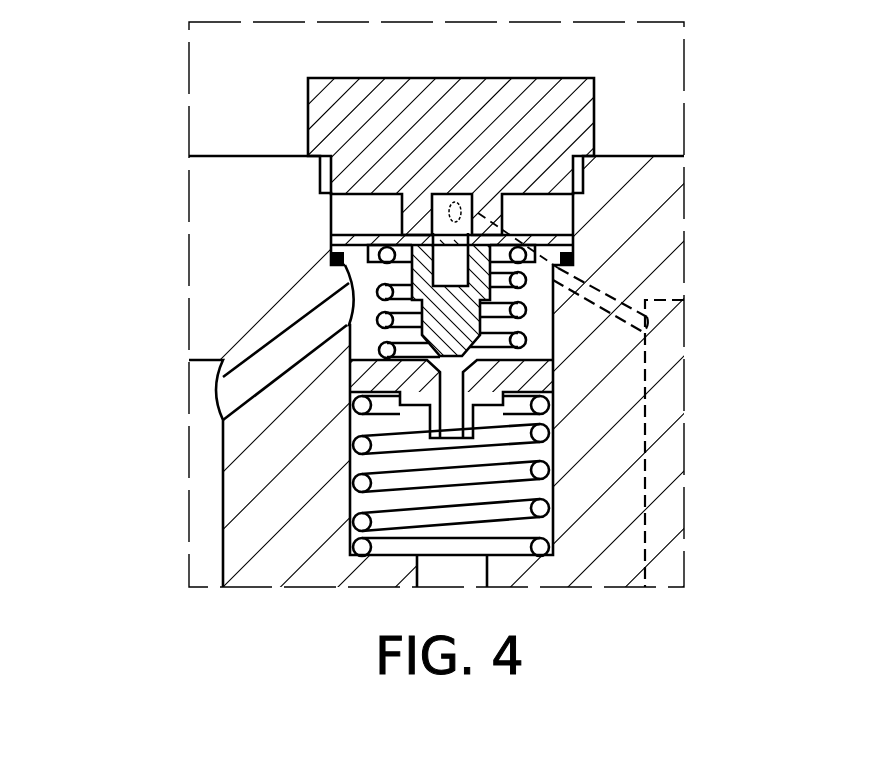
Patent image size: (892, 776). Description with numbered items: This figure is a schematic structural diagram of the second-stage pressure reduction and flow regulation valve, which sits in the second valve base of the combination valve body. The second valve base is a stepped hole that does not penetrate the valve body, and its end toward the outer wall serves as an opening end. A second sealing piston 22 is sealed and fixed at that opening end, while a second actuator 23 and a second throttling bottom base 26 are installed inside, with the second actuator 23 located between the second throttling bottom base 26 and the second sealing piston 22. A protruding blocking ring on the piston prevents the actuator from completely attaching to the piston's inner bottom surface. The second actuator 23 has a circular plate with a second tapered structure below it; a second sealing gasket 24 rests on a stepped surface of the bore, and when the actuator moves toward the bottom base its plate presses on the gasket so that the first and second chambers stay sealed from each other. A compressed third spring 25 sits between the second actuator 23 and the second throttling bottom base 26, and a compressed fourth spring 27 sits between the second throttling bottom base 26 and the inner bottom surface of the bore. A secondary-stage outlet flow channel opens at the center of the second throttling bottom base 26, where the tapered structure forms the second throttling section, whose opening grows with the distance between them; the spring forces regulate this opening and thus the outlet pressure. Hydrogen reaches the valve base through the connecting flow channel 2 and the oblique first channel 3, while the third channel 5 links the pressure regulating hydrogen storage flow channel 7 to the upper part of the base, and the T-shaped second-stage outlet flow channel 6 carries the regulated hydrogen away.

The connecting flow channel 2 is at (221, 437).
The first channel 3 is at (287, 347).
The third channel 5 is at (568, 275).
The second-stage outlet flow channel 6 is at (463, 582).
The pressure regulating hydrogen storage flow channel 7 is at (665, 313).
The second sealing piston 22 is at (333, 122).
The second actuator 23 is at (575, 230).
The second sealing gasket 24 is at (331, 253).
The third spring 25 is at (385, 320).
The second throttling bottom base 26 is at (517, 380).
The fourth spring 27 is at (542, 470).